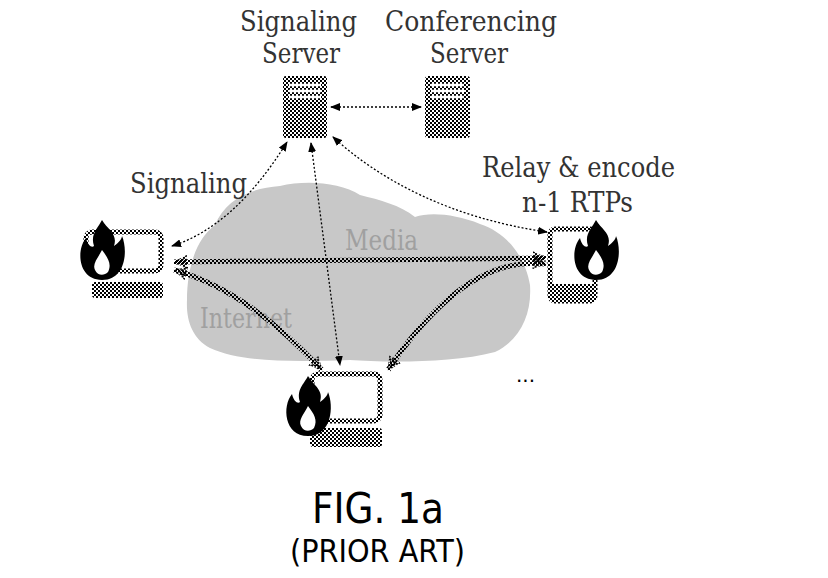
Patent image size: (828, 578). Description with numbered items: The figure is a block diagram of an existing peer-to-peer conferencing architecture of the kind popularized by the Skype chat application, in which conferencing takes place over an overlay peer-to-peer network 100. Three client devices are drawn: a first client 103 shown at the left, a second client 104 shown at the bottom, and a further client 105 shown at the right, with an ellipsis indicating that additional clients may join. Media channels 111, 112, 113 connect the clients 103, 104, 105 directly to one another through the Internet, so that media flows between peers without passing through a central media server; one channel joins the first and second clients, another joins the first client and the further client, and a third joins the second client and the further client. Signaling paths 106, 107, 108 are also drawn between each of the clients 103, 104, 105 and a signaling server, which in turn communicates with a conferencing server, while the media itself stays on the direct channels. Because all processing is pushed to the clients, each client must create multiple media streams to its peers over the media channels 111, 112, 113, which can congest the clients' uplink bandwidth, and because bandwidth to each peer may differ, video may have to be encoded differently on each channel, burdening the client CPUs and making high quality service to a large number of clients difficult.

The overlay peer-to-peer network 100 is at (168, 72).
The client 103 is at (118, 238).
The client 104 is at (305, 400).
The client 105 is at (596, 293).
The signaling connection between client 1 and signaling server 106 is at (278, 170).
The signaling connection between client 2 and signaling server 107 is at (323, 218).
The signaling connection between client n and signaling server 108 is at (413, 193).
The media channel 111 is at (262, 300).
The media channel 112 is at (421, 265).
The media channel 113 is at (432, 304).